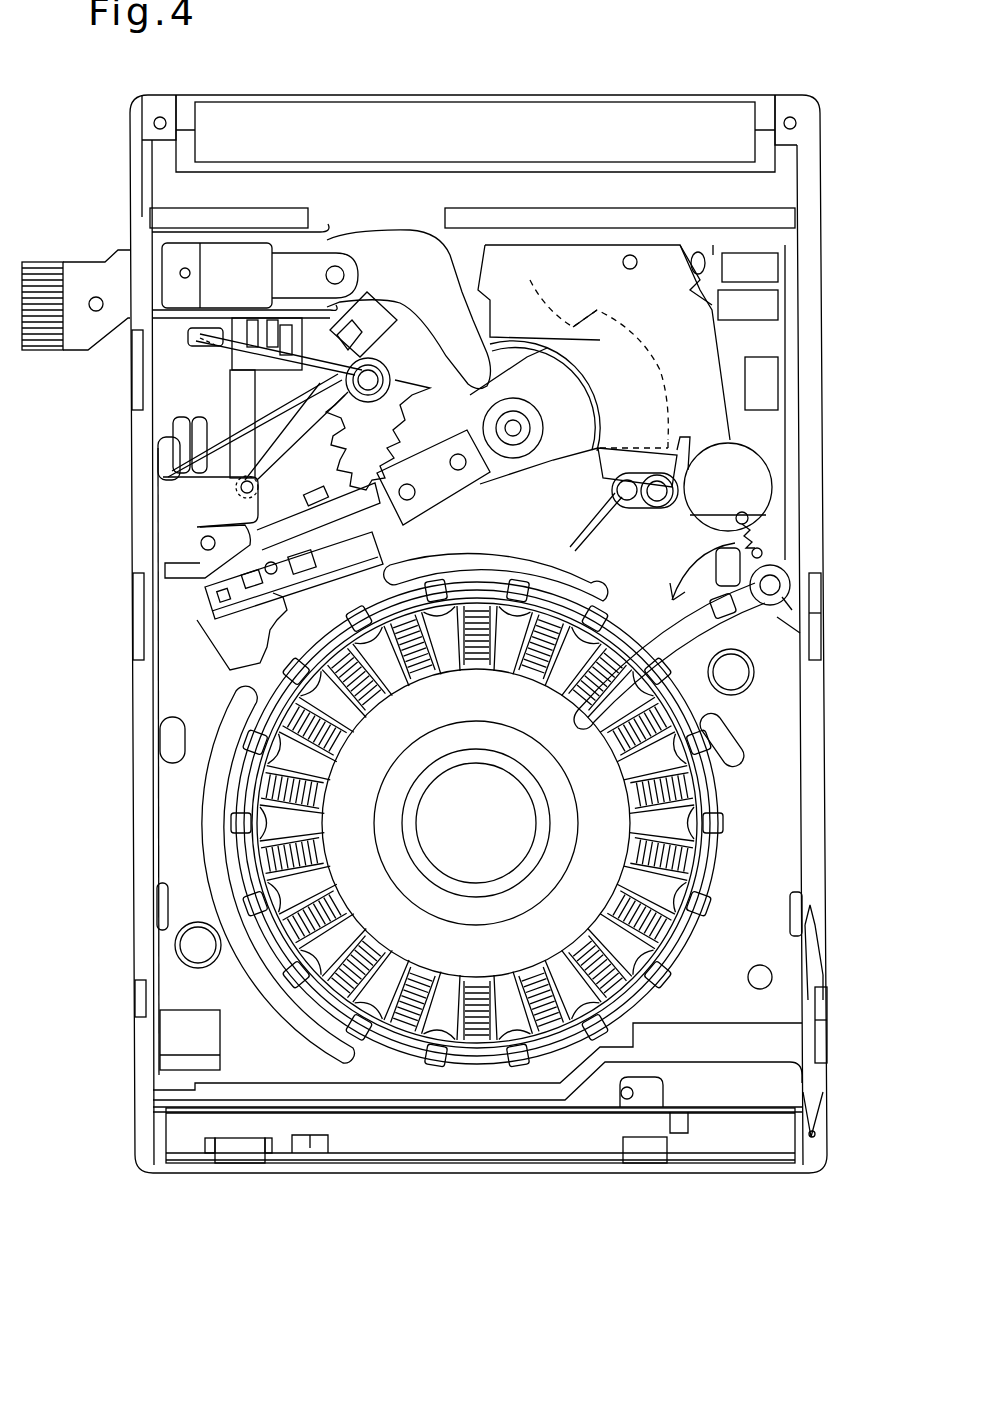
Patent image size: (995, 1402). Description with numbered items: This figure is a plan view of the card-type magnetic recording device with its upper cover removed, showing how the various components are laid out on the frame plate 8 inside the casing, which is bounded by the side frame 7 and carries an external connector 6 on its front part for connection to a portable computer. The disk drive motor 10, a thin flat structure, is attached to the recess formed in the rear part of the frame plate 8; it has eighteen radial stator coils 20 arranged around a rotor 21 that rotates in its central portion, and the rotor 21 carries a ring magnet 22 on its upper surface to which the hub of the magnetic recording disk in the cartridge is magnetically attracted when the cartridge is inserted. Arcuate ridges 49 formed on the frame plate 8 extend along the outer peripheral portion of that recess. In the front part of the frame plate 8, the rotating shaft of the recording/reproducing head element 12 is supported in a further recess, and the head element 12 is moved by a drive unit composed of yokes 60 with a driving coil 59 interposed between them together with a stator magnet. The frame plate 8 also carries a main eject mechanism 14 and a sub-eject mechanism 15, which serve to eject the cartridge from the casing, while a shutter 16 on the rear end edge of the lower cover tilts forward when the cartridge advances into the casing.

The external connector 6 is at (645, 118).
The side frame 7 is at (131, 560).
The frame plate 8 is at (770, 720).
The disk drive motor 10 is at (670, 790).
The recording/reproducing head element 12 is at (483, 480).
The main eject mechanism 14 is at (186, 505).
The sub-eject mechanism 15 is at (760, 555).
The shutter 16 is at (193, 1135).
The radial stator coils 20 is at (680, 885).
The rotor 21 is at (345, 828).
The ring magnet 22 is at (400, 755).
The arcuate ridges 49 is at (215, 785).
The driving coil 59 is at (592, 348).
The yokes 60 is at (710, 385).